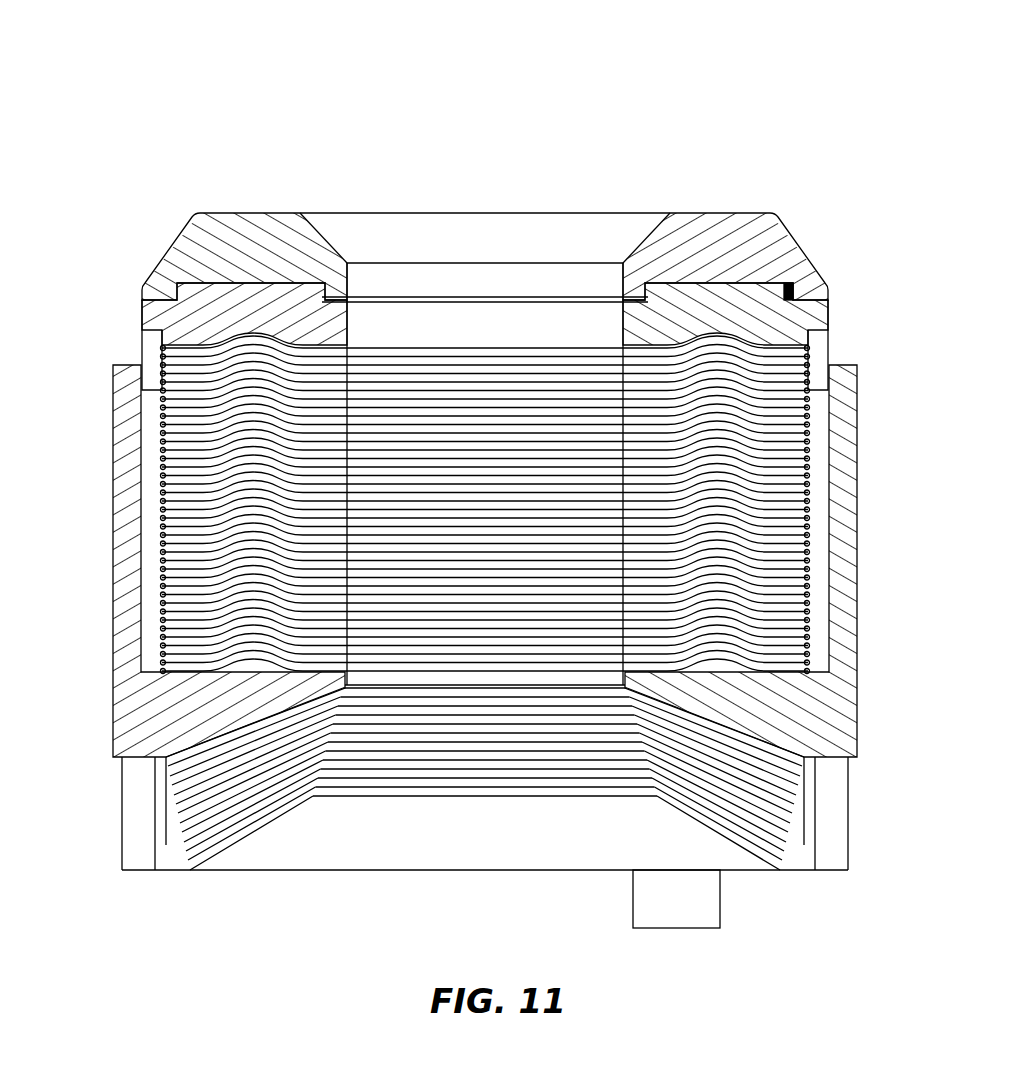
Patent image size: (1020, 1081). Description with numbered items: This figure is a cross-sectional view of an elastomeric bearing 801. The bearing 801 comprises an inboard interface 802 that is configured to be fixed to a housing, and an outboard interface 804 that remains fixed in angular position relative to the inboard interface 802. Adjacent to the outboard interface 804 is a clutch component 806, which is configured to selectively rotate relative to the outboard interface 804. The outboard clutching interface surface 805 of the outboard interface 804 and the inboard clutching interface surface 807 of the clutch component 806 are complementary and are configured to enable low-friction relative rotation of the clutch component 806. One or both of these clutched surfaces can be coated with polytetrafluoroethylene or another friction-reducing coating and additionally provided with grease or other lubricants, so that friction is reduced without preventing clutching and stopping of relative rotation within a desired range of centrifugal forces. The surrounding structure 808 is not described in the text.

The bearing 801 is at (194, 130).
The inboard interface 802 is at (798, 858).
The outboard interface 804 is at (700, 213).
The outboard clutching interface surface 805 is at (790, 290).
The clutch component 806 is at (337, 328).
The inboard clutching interface surface 807 is at (235, 280).
The housing 808 is at (138, 704).